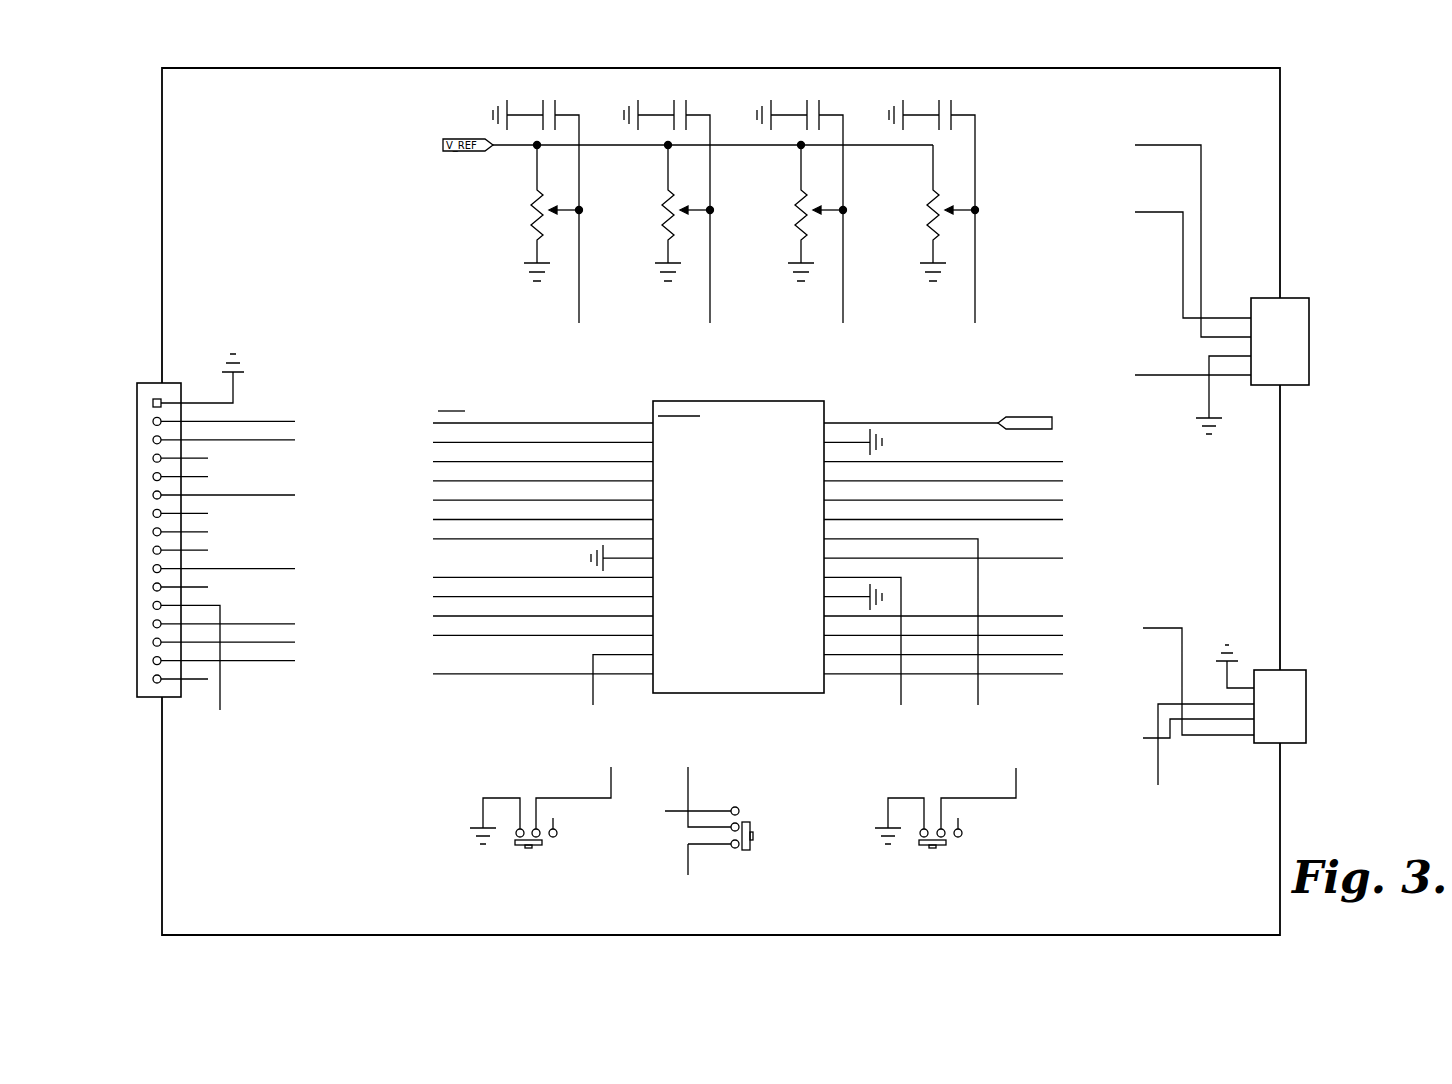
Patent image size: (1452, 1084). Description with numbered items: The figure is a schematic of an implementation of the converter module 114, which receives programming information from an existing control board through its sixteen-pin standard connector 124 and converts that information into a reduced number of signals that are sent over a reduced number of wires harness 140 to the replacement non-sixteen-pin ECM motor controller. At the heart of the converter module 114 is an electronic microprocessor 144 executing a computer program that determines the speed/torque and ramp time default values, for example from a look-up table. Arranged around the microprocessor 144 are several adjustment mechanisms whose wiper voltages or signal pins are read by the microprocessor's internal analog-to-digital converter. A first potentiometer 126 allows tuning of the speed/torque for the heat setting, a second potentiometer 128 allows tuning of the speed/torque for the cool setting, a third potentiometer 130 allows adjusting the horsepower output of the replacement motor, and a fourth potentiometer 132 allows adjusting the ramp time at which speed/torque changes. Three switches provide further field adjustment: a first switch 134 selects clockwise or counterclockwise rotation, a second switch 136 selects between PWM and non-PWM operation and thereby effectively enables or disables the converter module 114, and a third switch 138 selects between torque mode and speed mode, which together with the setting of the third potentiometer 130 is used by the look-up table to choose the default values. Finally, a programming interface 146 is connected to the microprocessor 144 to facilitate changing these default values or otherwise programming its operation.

The converter module 114 is at (1267, 118).
The sixteen-pin standard connector 124 is at (152, 708).
The first potentiometer 126 is at (506, 273).
The second potentiometer 128 is at (775, 292).
The third potentiometer 130 is at (648, 290).
The fourth potentiometer 132 is at (897, 296).
The first switch 134 is at (498, 776).
The second switch 136 is at (744, 788).
The third switch 138 is at (941, 779).
The reduced number of wires harness 140 is at (1293, 312).
The microprocessor 144 is at (783, 398).
The programming interface 146 is at (1287, 680).